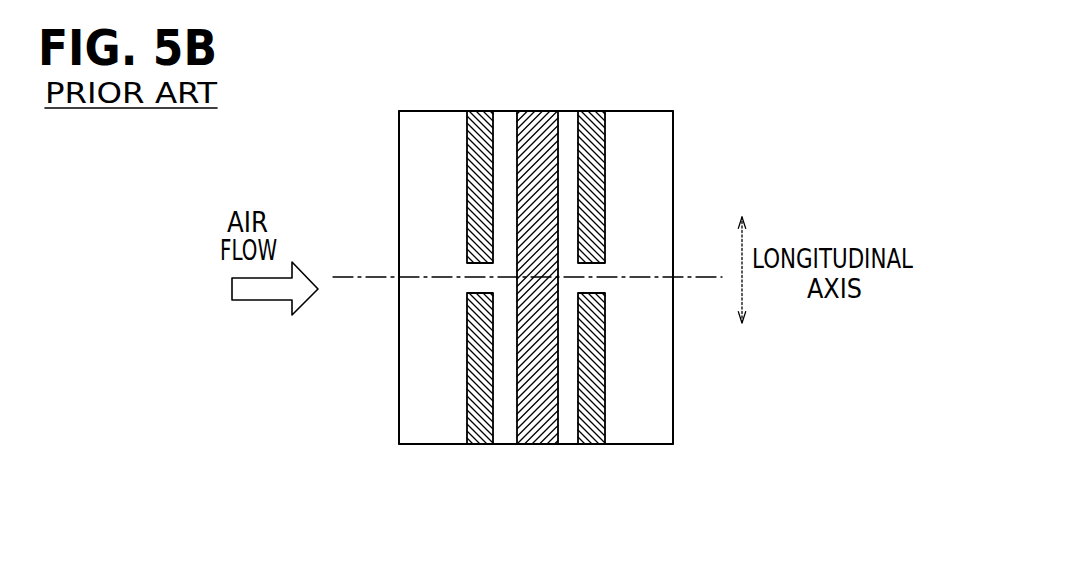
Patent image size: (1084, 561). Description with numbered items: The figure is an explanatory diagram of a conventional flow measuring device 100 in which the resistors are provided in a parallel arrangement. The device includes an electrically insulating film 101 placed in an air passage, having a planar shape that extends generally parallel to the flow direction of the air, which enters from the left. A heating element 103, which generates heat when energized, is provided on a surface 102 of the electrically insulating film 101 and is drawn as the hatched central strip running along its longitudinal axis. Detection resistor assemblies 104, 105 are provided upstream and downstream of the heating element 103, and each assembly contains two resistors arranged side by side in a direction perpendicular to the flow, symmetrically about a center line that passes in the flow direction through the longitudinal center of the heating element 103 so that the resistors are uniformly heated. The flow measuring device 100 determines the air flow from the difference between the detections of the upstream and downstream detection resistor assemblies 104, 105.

The flow measuring device 100 is at (684, 100).
The electrically insulating film 101 is at (673, 134).
The surface 102 is at (655, 168).
The heating element 103 is at (537, 420).
The detection resistor assembly 104 is at (457, 268).
The detection resistor assembly 105 is at (613, 305).